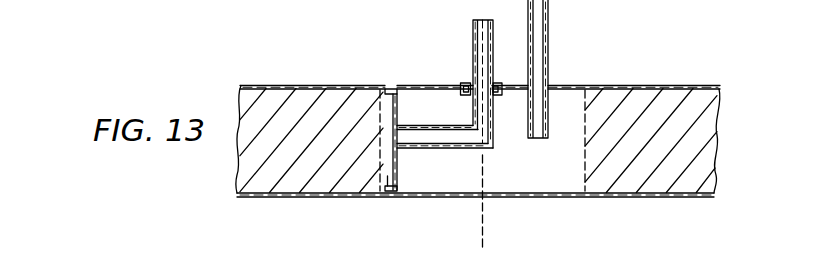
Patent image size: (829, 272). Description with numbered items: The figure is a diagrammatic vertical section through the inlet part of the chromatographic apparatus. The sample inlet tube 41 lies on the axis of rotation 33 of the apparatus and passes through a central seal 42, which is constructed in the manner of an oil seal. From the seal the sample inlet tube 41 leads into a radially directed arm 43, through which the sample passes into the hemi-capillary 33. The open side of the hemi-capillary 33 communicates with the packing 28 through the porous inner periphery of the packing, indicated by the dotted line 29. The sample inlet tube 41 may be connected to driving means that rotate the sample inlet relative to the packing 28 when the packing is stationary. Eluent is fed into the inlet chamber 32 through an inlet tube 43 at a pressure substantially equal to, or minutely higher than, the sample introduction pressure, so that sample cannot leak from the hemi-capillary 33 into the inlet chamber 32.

The packing 28 is at (650, 106).
The dotted line indicating porous inner periphery of packing 29 is at (383, 118).
The inlet chamber 32 is at (526, 167).
The hemi-capillary 33 is at (388, 187).
The sample inlet tube 41 is at (486, 35).
The central seal 42 is at (464, 84).
The radially directed arm 43 is at (546, 23).